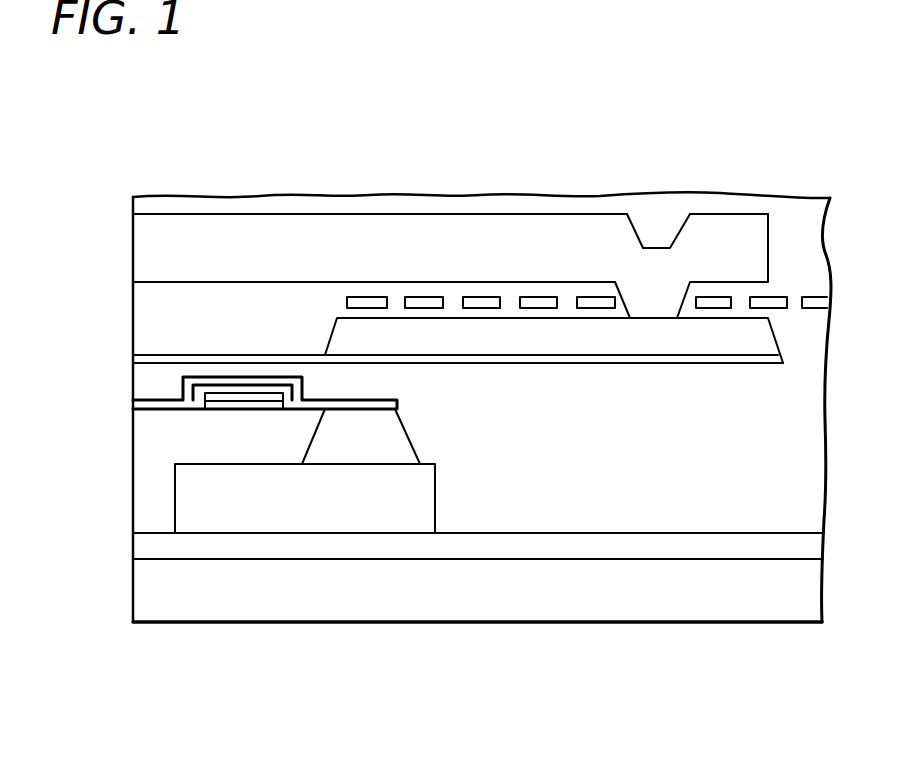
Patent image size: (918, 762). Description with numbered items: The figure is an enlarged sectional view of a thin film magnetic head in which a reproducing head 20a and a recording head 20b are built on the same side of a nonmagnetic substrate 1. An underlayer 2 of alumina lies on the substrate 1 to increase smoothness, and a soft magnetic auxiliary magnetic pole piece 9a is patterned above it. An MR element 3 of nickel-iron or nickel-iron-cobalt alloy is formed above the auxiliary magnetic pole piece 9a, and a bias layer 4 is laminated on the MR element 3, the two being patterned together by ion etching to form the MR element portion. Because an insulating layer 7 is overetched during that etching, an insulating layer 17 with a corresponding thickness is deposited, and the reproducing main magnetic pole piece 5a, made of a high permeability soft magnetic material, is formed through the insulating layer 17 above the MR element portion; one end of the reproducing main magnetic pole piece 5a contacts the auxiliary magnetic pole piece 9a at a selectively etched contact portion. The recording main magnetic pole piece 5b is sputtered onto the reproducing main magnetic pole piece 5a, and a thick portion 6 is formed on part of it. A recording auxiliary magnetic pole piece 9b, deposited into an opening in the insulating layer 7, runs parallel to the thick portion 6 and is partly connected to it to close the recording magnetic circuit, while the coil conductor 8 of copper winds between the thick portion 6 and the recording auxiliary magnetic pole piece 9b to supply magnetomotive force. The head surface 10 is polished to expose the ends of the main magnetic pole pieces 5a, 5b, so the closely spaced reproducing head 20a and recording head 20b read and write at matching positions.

The substrate 1 is at (157, 600).
The underlayer 2 is at (295, 543).
The MR element 3 is at (220, 405).
The bias layer 4 is at (210, 392).
The insulating layer 17 is at (228, 392).
The reproducing main magnetic pole piece 5a is at (140, 405).
The recording main magnetic pole piece 5b is at (135, 358).
The thick portion 6 is at (453, 337).
The insulating layer 7 is at (378, 383).
The coil conductor 8 is at (533, 296).
The auxiliary magnetic pole piece 9a is at (417, 515).
The recording auxiliary magnetic pole piece 9b is at (622, 227).
The head surface 10 is at (130, 533).
The reproducing head 20a is at (440, 497).
The recording head 20b is at (128, 238).